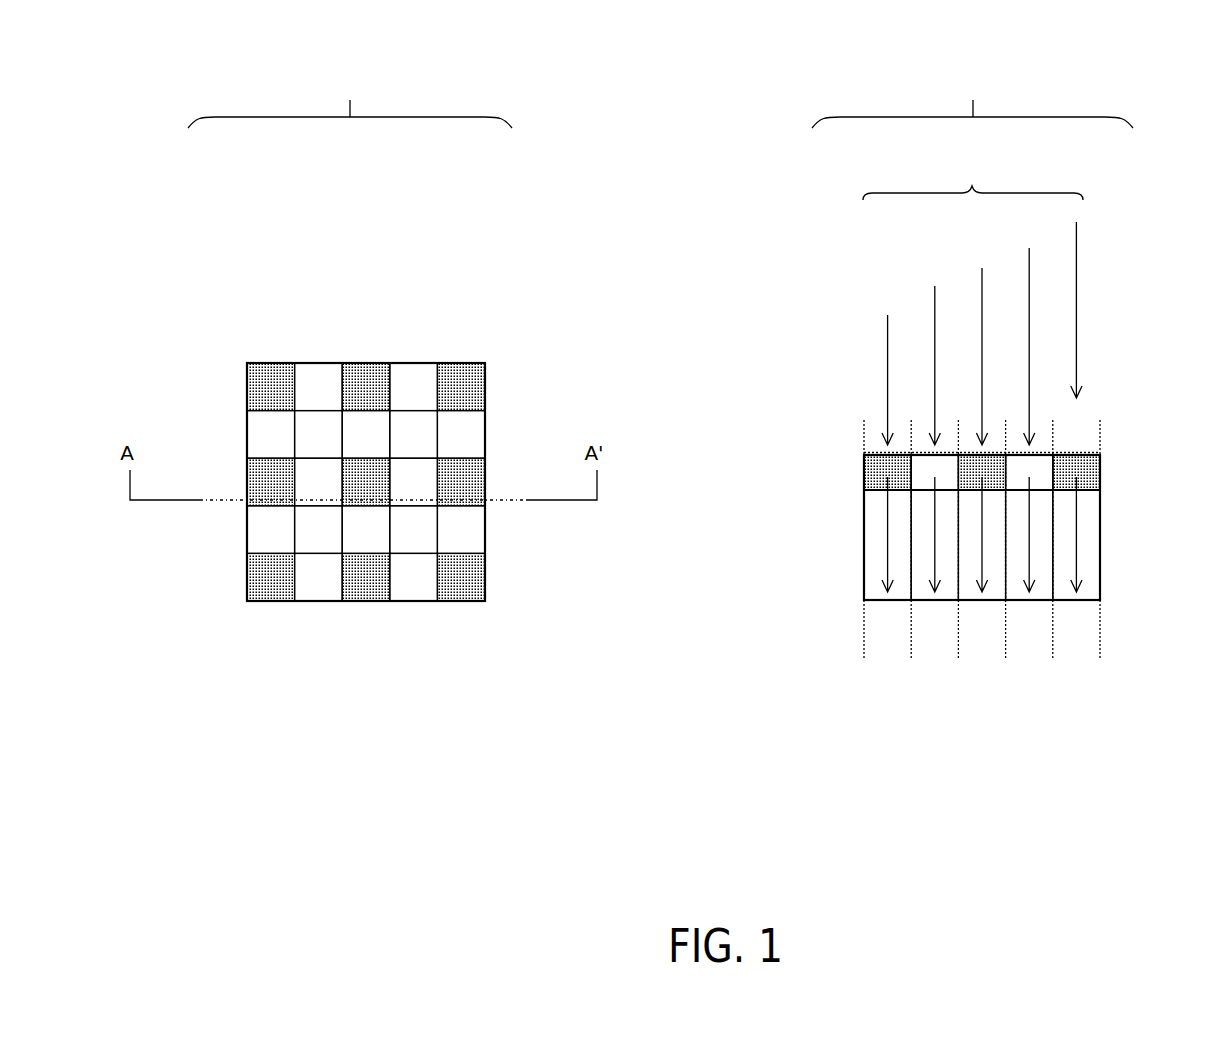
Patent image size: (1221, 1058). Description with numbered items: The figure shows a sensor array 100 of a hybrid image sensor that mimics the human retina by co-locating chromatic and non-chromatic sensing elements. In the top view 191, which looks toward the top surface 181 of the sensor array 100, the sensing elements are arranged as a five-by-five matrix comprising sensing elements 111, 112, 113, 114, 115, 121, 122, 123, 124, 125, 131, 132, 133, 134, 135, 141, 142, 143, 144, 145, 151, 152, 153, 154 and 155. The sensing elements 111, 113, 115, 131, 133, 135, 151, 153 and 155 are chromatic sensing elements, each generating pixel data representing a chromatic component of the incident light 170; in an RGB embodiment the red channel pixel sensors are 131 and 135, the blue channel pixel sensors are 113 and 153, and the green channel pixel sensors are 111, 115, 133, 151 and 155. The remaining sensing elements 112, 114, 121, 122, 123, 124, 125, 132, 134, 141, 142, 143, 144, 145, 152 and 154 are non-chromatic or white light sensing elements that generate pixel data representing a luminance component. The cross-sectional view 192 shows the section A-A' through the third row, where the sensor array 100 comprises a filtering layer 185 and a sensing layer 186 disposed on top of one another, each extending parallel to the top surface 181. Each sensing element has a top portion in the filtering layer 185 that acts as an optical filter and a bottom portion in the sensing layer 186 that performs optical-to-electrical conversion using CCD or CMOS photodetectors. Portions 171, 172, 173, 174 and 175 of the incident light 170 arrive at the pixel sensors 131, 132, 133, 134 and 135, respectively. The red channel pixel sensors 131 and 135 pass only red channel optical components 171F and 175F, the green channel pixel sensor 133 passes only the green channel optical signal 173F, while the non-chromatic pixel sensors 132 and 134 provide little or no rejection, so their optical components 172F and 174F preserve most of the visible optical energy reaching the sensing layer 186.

The sensor array 100 is at (231, 345).
The sensing element 111 is at (282, 398).
The sensing element 112 is at (307, 398).
The sensing element 113 is at (355, 398).
The sensing element 114 is at (425, 398).
The sensing element 115 is at (450, 398).
The sensing element 121 is at (282, 446).
The sensing element 122 is at (307, 446).
The sensing element 123 is at (355, 446).
The sensing element 124 is at (425, 446).
The sensing element 125 is at (450, 446).
The red channel pixel sensor 131 is at (282, 494).
The pixel sensor 132 is at (307, 494).
The green channel pixel sensor 133 is at (355, 494).
The pixel sensor 134 is at (425, 494).
The red channel pixel sensor 135 is at (450, 494).
The sensing element 141 is at (282, 541).
The sensing element 142 is at (307, 541).
The sensing element 143 is at (355, 541).
The sensing element 144 is at (425, 541).
The sensing element 145 is at (450, 541).
The sensing element 151 is at (282, 589).
The sensing element 152 is at (307, 589).
The sensing element 153 is at (355, 589).
The sensing element 154 is at (425, 589).
The sensing element 155 is at (450, 589).
The incident light 170 is at (973, 178).
The portion of the incident light 171 is at (888, 350).
The portion of the incident light 172 is at (935, 302).
The portion of the incident light 173 is at (982, 280).
The portion of the incident light 174 is at (1029, 258).
The portion of the incident light 175 is at (1076, 233).
The optical components 171F is at (888, 565).
The optical components 172F is at (935, 532).
The optical signal 173F is at (982, 530).
The optical components 174F is at (1029, 552).
The optical components 175F is at (1076, 568).
The top surface 181 is at (316, 362).
The filtering layer 185 is at (855, 455).
The sensing layer 186 is at (855, 492).
The top view 191 is at (350, 84).
The cross-sectional view 192 is at (972, 88).